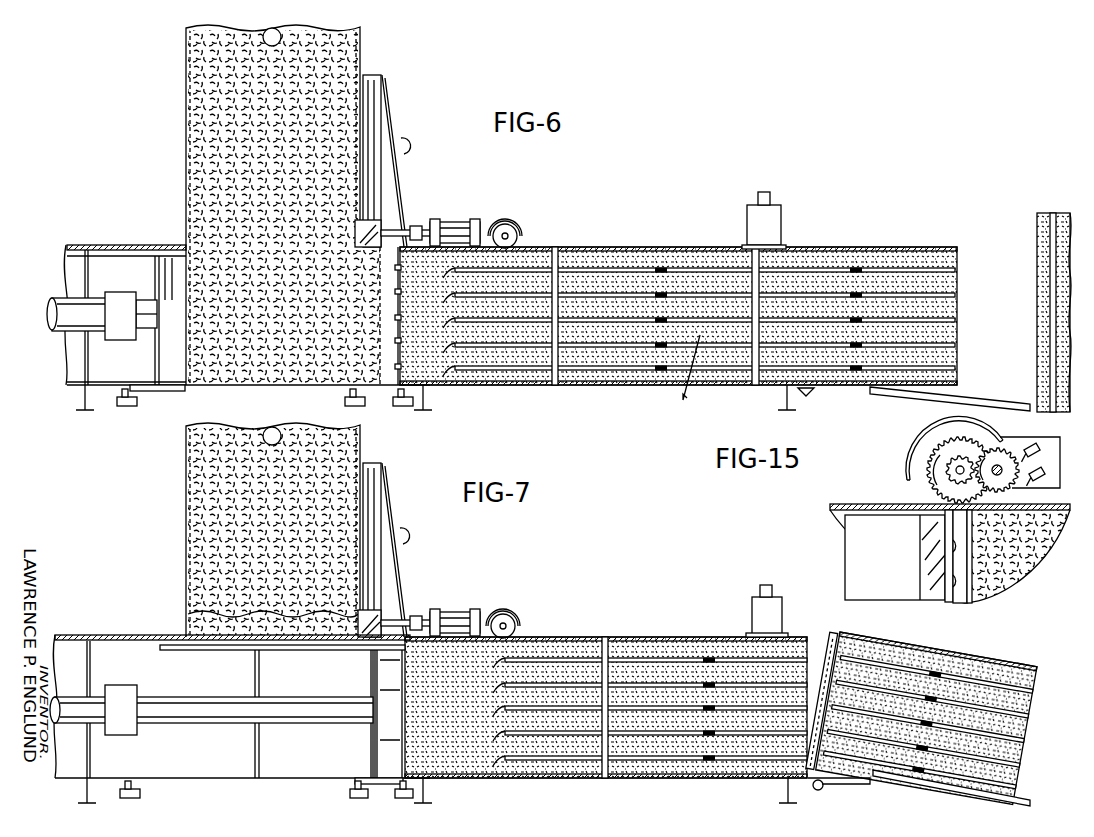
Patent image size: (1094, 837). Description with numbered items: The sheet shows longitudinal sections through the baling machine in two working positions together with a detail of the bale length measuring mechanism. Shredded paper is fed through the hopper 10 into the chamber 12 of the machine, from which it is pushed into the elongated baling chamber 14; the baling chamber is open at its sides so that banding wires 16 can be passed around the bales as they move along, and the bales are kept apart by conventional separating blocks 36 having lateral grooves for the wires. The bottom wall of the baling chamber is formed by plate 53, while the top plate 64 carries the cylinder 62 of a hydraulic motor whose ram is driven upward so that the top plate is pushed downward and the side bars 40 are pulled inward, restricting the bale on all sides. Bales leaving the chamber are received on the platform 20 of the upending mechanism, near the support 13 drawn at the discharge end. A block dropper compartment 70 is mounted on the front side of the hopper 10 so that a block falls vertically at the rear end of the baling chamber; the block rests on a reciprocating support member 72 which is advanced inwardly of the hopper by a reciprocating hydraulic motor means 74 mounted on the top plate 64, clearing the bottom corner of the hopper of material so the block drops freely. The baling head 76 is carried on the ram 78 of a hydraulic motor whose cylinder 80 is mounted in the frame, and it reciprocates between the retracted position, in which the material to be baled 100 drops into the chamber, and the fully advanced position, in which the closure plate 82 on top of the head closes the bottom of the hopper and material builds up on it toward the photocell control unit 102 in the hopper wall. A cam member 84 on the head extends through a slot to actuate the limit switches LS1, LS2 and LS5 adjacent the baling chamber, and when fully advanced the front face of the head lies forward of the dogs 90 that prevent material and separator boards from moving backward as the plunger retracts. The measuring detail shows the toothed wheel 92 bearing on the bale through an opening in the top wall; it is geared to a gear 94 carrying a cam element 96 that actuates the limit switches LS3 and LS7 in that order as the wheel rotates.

In FIG. 6, the hopper 10 is at (361, 42).
In FIG. 7, the hopper 10 is at (361, 448).
In FIG. 6, the chamber 12 is at (247, 309).
In FIG. 7, the chamber 12 is at (241, 698).
In FIG. 15, the chamber 12 is at (881, 570).
In FIG. 6, the pivot/leg support 13 is at (811, 399).
In FIG. 7, the pivot/leg support 13 is at (826, 792).
In FIG. 6, the baling chamber 14 is at (678, 314).
In FIG. 7, the baling chamber 14 is at (606, 706).
In FIG. 6, the banding wires 16 is at (640, 295).
In FIG. 7, the banding wires 16 is at (672, 685).
In FIG. 6, the platform 20 is at (1000, 405).
In FIG. 7, the platform 20 is at (923, 703).
In FIG. 6, the blocks 36 is at (556, 252).
In FIG. 15, the blocks 36 is at (968, 602).
In FIG. 6, the bars 40 is at (693, 376).
In FIG. 6, the plate 53 is at (728, 386).
In FIG. 7, the plate 53 is at (650, 779).
In FIG. 6, the cylinder 62 is at (783, 212).
In FIG. 7, the cylinder 62 is at (784, 603).
In FIG. 6, the top plate 64 is at (543, 247).
In FIG. 7, the top plate 64 is at (556, 640).
In FIG. 6, the block dropper compartment 70 is at (385, 76).
In FIG. 7, the block dropper compartment 70 is at (385, 475).
In FIG. 6, the reciprocating support member 72 is at (378, 228).
In FIG. 7, the reciprocating support member 72 is at (380, 618).
In FIG. 6, the reciprocating hydraulic motor means 74 is at (456, 222).
In FIG. 7, the reciprocating hydraulic motor means 74 is at (456, 612).
In FIG. 6, the baling head 76 is at (168, 262).
In FIG. 7, the baling head 76 is at (371, 690).
In FIG. 15, the baling head 76 is at (928, 590).
In FIG. 6, the ram 78 is at (150, 300).
In FIG. 7, the ram 78 is at (294, 712).
In FIG. 6, the cylinder 80 is at (62, 330).
In FIG. 7, the cylinder 80 is at (100, 698).
In FIG. 6, the closure plate 82 is at (97, 248).
In FIG. 7, the closure plate 82 is at (173, 640).
In FIG. 6, the cam member 84 is at (176, 390).
In FIG. 7, the cam member 84 is at (362, 777).
In FIG. 6, the dogs 90 is at (400, 367).
In FIG. 6, the measuring wheel 92 is at (511, 225).
In FIG. 7, the measuring wheel 92 is at (508, 615).
In FIG. 15, the measuring wheel 92 is at (930, 482).
In FIG. 15, the gear 94 is at (1002, 447).
In FIG. 15, the cam element 96 is at (1042, 462).
In FIG. 6, the material to be baled 100 is at (196, 102).
In FIG. 6, the photocell control unit 102 is at (259, 40).
In FIG. 7, the photocell control unit 102 is at (259, 438).
In FIG. 6, the limit switch LS1 is at (128, 406).
In FIG. 7, the limit switch LS1 is at (140, 793).
In FIG. 6, the limit switch LS2 is at (399, 406).
In FIG. 7, the limit switch LS2 is at (396, 798).
In FIG. 15, the limit switch LS3 is at (1036, 446).
In FIG. 6, the limit switch LS5 is at (348, 406).
In FIG. 7, the limit switch LS5 is at (350, 797).
In FIG. 15, the limit switch LS7 is at (1046, 470).